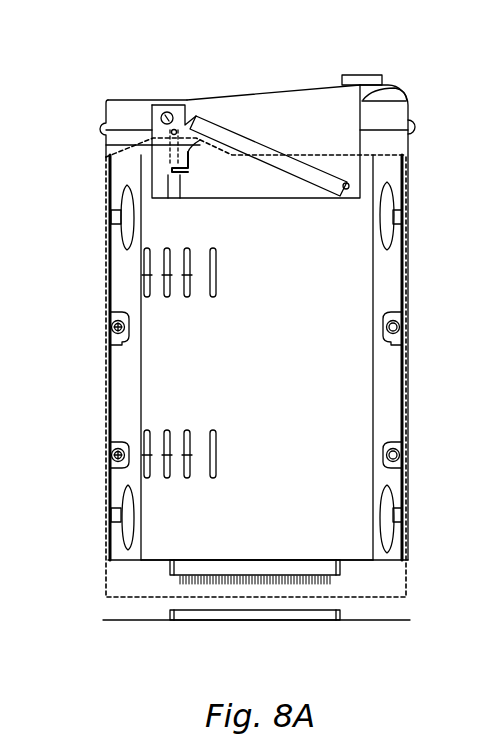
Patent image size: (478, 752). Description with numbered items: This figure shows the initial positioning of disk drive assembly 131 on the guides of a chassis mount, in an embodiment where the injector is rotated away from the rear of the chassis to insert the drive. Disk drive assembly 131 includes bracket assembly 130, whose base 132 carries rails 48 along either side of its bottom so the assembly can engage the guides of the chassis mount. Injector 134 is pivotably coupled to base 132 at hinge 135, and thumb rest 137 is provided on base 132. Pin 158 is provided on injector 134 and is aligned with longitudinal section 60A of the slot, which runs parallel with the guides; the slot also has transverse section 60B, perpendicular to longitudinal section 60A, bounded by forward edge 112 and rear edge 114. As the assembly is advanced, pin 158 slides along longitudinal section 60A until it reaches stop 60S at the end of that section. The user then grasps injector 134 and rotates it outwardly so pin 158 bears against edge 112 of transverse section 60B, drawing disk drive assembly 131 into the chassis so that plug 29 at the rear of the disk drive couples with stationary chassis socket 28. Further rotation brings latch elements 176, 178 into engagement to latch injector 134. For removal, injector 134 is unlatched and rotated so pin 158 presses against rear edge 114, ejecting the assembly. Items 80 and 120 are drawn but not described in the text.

The disk drive assembly 131 is at (76, 84).
The lid / cover 80 is at (290, 107).
The thumb rest 137 is at (363, 75).
The latch element 178 is at (401, 98).
The base 132 is at (103, 144).
The hinge 135 is at (165, 112).
The pin 158 is at (176, 129).
The forward edge of transverse section 112 is at (193, 161).
The longitudinal section 60A is at (172, 175).
The transverse section 60B is at (190, 178).
The rear edge of transverse section 114 is at (190, 172).
The stop 60S is at (184, 176).
The injector 134 is at (300, 176).
The latch element 176 is at (347, 191).
The rails 48 is at (107, 394).
The bracket assembly 130 is at (263, 384).
The carrier outline 120 is at (105, 585).
The plug 29 is at (266, 566).
The socket 28 is at (324, 618).